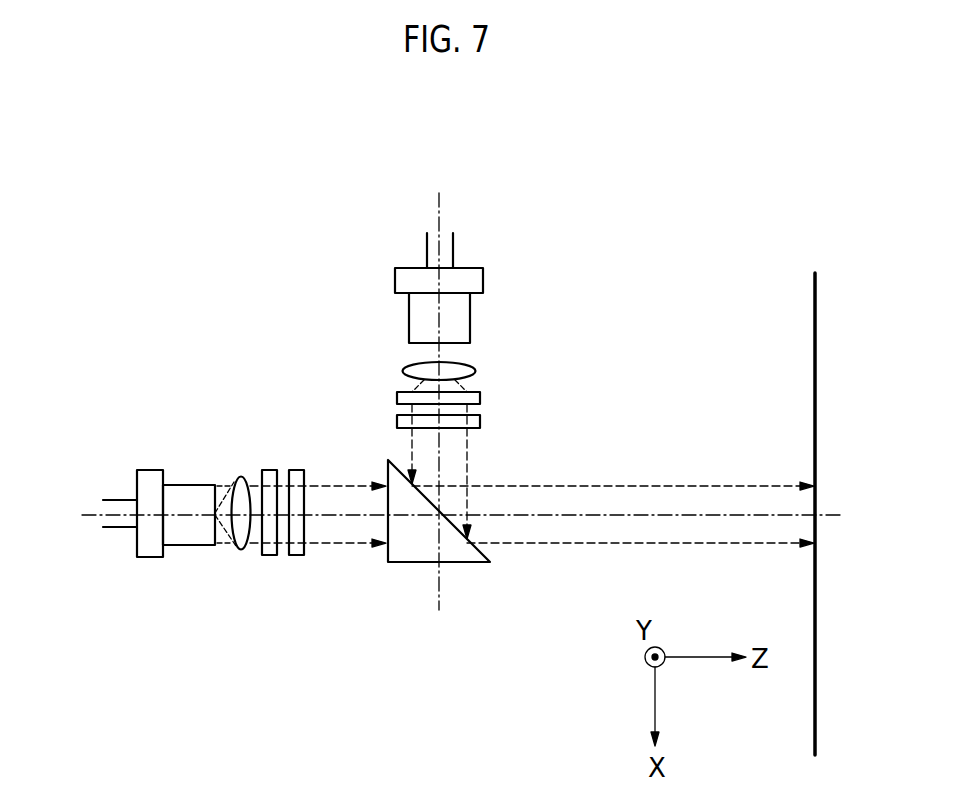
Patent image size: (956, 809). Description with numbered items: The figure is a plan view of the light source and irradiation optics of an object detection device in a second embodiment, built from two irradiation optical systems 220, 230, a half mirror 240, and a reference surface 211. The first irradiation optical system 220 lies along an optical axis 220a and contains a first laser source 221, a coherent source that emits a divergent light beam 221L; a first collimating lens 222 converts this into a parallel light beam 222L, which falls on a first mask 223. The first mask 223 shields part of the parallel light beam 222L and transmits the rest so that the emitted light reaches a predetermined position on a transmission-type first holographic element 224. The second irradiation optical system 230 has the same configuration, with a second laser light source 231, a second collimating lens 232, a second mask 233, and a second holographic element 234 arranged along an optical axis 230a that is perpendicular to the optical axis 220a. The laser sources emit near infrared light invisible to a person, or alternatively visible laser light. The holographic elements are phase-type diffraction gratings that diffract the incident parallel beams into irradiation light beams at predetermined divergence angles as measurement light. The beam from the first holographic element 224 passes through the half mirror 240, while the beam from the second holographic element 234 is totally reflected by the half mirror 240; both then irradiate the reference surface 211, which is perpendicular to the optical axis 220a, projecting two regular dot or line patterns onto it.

The reference surface 211 is at (813, 288).
The first irradiation optical system 220 is at (362, 640).
The optical axis of the first irradiation optical system 220a is at (97, 516).
The first laser source 221 is at (157, 558).
The divergent light beam 221L is at (222, 497).
The first collimating lens 222 is at (241, 551).
The parallel light beam 222L is at (256, 477).
The first mask 223 is at (270, 556).
The first holographic element 224 is at (297, 556).
The second irradiation optical system 230 is at (582, 258).
The optical axis of the second irradiation optical system 230a is at (441, 205).
The second laser light source 231 is at (468, 280).
The second collimating lens 232 is at (470, 368).
The second mask 233 is at (481, 399).
The second holographic element 234 is at (478, 423).
The half mirror 240 is at (470, 563).